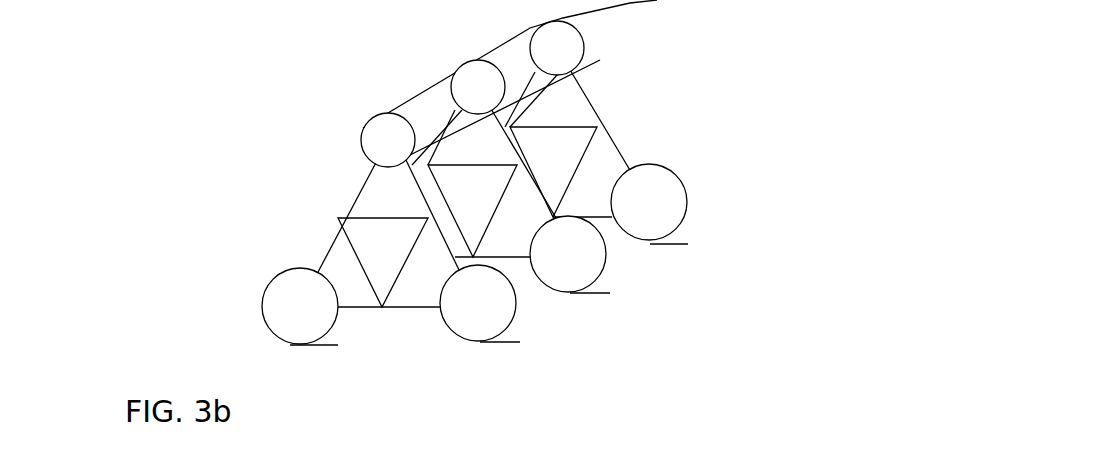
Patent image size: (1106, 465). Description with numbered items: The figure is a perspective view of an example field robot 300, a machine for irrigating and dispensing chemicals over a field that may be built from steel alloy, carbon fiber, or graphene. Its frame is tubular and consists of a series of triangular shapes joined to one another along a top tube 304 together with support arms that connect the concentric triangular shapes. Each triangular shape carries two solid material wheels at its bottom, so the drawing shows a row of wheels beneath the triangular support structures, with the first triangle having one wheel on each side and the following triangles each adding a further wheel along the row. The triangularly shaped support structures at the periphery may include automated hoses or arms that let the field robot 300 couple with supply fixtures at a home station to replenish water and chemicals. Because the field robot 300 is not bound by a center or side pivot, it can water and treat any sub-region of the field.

The field robot 300 is at (708, 62).
The top tube 304 is at (367, 125).